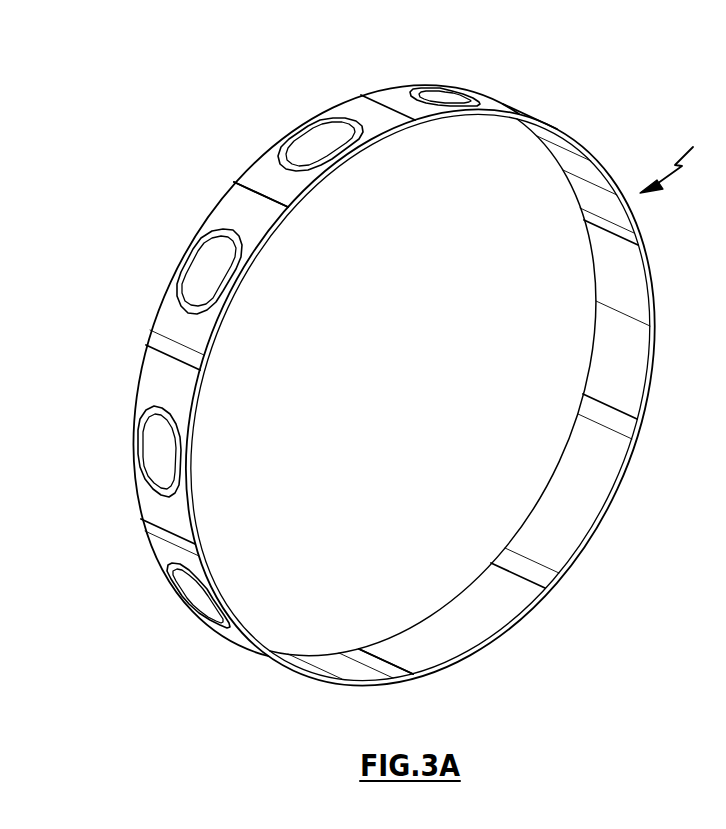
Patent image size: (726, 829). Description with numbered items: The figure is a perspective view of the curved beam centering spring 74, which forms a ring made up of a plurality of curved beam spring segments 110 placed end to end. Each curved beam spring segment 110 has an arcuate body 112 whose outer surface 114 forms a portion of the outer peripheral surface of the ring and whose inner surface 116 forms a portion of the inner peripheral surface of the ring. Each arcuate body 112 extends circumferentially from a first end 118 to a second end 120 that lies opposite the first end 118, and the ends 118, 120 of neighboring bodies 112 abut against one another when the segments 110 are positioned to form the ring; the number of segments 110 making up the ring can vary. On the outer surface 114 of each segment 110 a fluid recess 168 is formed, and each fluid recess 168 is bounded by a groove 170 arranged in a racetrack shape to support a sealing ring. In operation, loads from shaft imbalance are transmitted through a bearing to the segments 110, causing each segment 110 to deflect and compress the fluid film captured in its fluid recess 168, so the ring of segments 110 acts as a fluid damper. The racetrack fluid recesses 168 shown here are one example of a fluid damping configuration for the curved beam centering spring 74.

The curved beam centering spring 74 is at (674, 158).
The curved beam spring segment 110 is at (463, 117).
The arcuate body 112 is at (427, 92).
The outer surface 114 is at (210, 222).
The inner surface 116 is at (337, 663).
The first end 118 is at (395, 93).
The second end 120 is at (277, 213).
The fluid recess 168 is at (305, 142).
The groove 170 is at (343, 142).